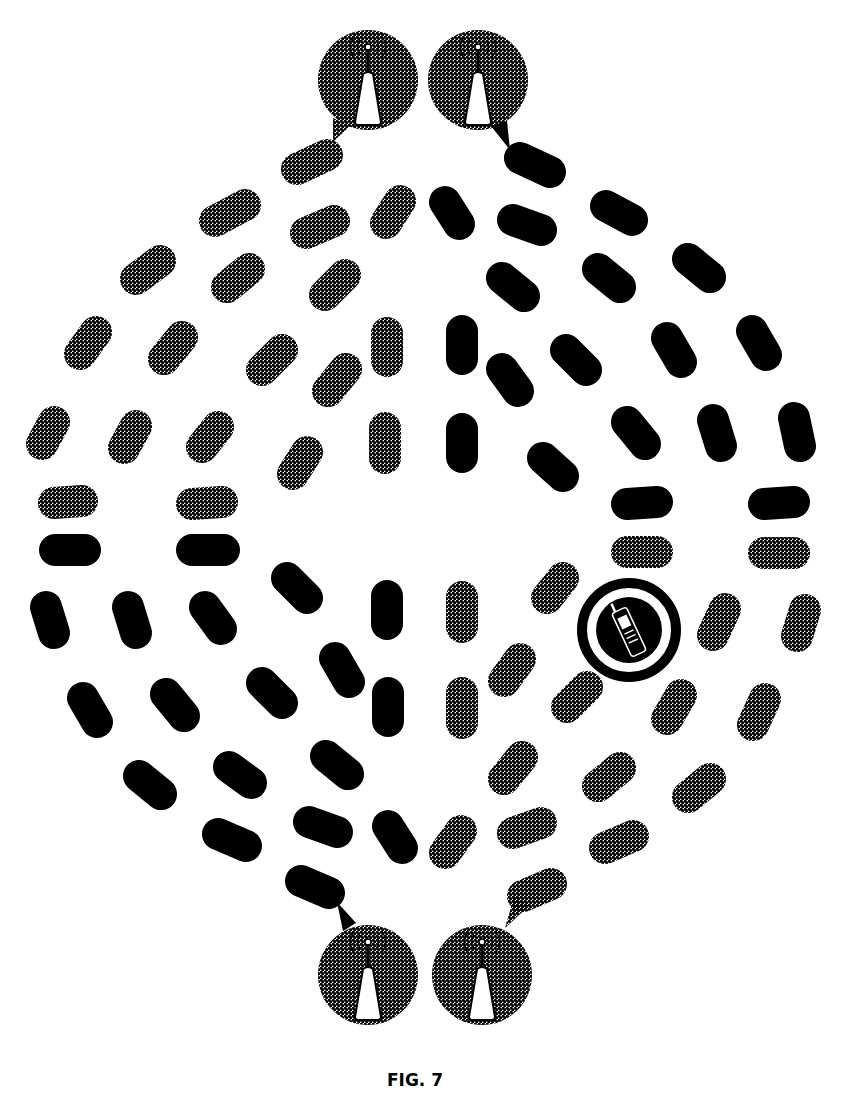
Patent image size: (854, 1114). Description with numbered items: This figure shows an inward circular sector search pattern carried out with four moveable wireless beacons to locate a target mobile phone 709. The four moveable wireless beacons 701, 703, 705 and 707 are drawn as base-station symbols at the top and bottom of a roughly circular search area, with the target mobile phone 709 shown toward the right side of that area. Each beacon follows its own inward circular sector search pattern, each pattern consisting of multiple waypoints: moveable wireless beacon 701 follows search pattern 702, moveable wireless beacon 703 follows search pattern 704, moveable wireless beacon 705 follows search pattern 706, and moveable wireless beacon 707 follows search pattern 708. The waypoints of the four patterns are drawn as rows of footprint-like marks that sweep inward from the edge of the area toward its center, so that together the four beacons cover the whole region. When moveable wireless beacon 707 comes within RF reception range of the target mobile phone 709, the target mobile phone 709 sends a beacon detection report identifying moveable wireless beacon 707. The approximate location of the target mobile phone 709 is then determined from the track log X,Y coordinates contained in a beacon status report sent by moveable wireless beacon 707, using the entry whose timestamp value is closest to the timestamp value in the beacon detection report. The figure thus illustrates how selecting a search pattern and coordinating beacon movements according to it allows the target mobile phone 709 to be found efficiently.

The moveable wireless beacon 701 is at (318, 77).
The inward circular sector search pattern 702 is at (203, 207).
The moveable wireless beacon 703 is at (533, 65).
The inward circular sector search pattern 704 is at (631, 200).
The moveable wireless beacon 705 is at (318, 972).
The inward circular sector search pattern 706 is at (212, 852).
The moveable wireless beacon 707 is at (533, 962).
The inward circular sector search pattern 708 is at (634, 852).
The target mobile phone 709 is at (577, 620).